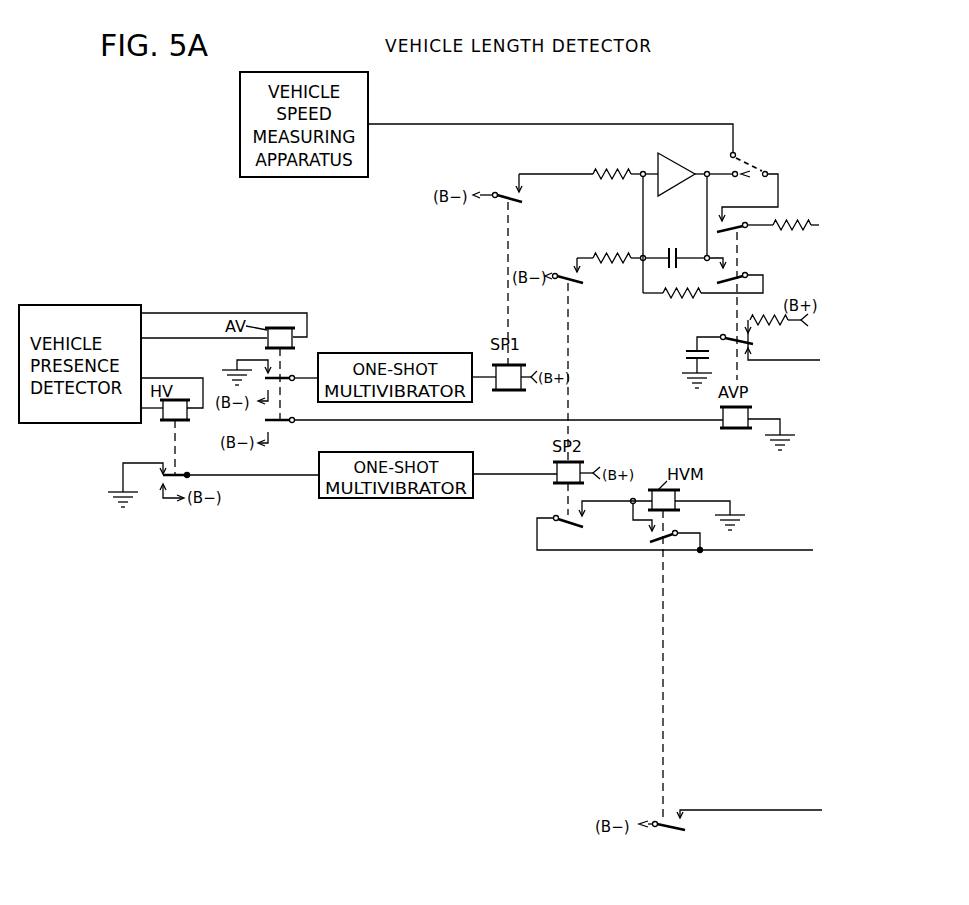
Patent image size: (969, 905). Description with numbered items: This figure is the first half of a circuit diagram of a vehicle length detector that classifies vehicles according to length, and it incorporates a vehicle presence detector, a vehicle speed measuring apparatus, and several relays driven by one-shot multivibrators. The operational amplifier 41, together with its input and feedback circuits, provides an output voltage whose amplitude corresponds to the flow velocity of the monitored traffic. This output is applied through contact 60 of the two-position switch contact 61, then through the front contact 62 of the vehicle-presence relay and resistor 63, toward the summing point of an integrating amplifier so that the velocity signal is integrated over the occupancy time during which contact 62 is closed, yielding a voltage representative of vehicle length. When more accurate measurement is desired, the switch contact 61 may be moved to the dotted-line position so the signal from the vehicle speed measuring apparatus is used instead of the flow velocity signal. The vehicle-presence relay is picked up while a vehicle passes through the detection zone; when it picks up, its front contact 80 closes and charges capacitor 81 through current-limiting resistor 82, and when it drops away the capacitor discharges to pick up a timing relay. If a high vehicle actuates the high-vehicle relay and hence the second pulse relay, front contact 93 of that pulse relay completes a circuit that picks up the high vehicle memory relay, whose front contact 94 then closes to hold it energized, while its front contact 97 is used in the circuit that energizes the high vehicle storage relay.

The operational amplifier 41 is at (672, 162).
The contact 60 is at (735, 177).
The two-position switch contact 61 is at (760, 177).
The front contact of relay AVP 62 is at (735, 229).
The resistor 63 is at (790, 230).
The front contact of relay AVP 80 is at (736, 339).
The capacitor 81 is at (690, 350).
The current-limiting resistor 82 is at (779, 333).
The front contact of relay SP2 93 is at (567, 534).
The front contact of relay HVM 94 is at (650, 541).
The front contact of relay HVM 97 is at (666, 835).